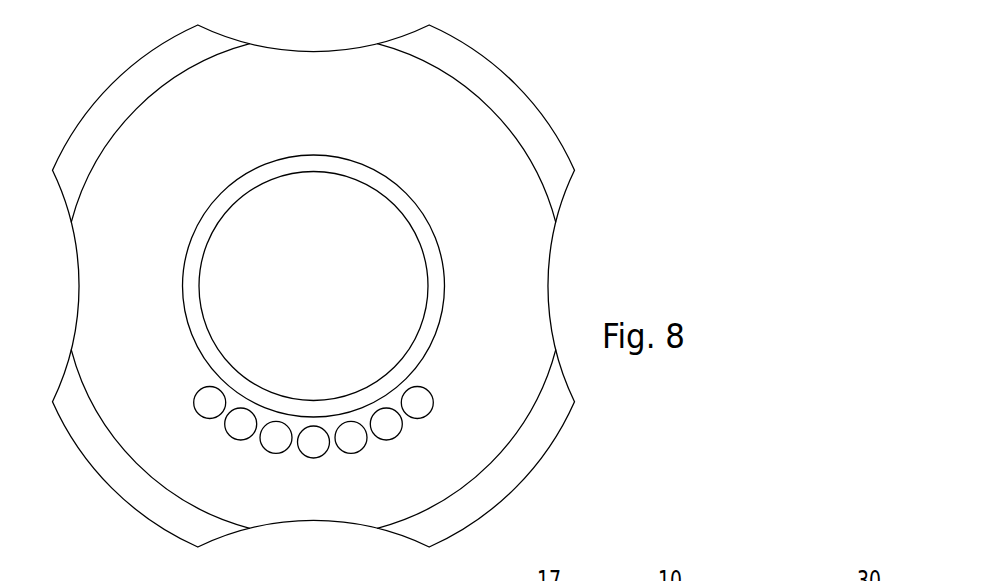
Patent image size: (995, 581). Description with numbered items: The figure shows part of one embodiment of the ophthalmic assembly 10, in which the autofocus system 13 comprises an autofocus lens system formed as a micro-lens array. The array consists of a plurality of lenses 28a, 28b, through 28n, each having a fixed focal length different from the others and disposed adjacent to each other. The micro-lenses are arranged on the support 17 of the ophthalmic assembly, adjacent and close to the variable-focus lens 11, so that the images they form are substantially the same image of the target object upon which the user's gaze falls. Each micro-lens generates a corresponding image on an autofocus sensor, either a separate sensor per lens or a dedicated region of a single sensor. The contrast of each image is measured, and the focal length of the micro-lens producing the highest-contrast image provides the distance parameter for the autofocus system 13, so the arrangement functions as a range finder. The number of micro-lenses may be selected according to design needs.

The ophthalmic assembly 10 is at (353, 286).
The variable-focus lens 11 is at (397, 263).
The autofocus system 13 is at (314, 479).
The support 17 is at (462, 110).
The lens 28a is at (202, 399).
The lens 28b is at (232, 430).
The lens 28n is at (422, 403).